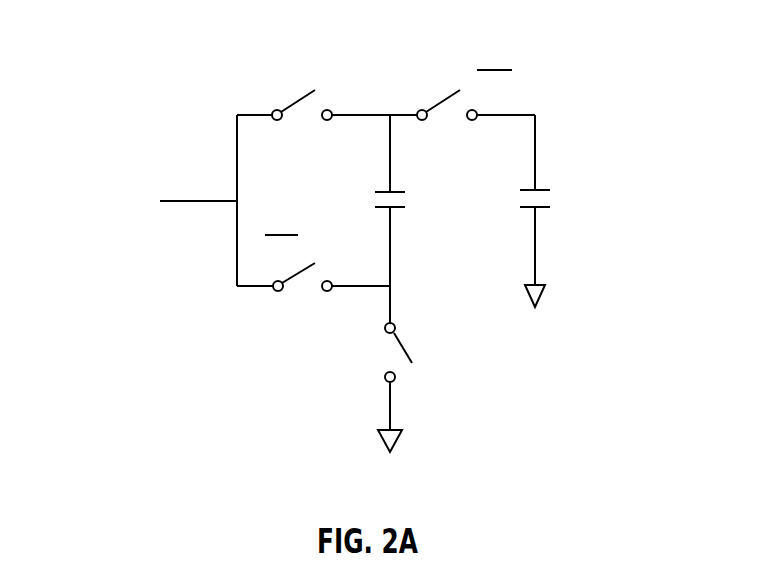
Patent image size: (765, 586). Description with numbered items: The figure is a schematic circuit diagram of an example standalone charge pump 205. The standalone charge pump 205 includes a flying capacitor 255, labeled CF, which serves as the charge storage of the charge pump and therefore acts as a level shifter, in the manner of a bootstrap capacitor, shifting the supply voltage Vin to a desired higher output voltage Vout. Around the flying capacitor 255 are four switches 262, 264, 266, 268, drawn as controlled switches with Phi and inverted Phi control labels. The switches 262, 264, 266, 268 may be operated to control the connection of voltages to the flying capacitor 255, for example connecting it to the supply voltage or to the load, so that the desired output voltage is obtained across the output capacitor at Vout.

The standalone charge pump 205 is at (114, 36).
The switch 262 is at (296, 102).
The switch 264 is at (443, 102).
The flying capacitor 255 is at (397, 190).
The switch 266 is at (296, 278).
The switch 268 is at (405, 345).